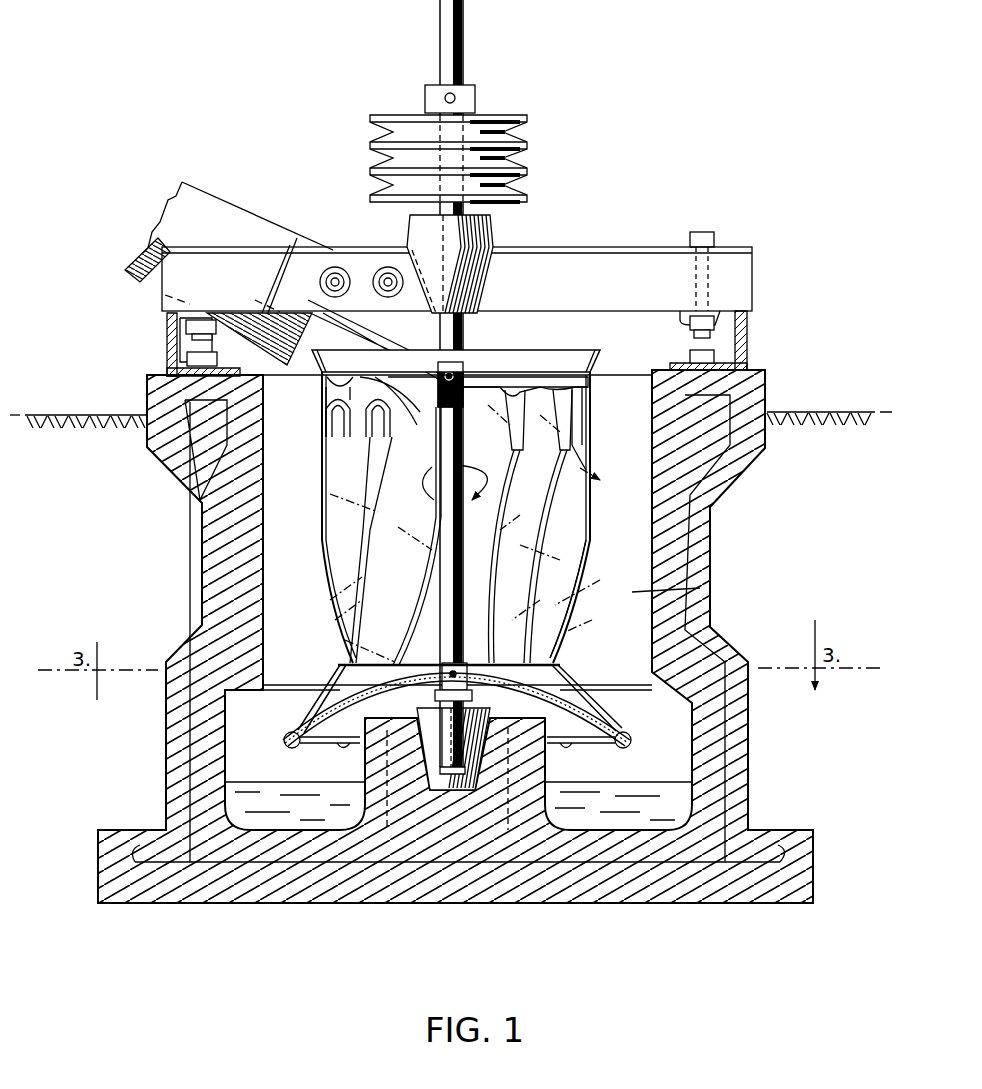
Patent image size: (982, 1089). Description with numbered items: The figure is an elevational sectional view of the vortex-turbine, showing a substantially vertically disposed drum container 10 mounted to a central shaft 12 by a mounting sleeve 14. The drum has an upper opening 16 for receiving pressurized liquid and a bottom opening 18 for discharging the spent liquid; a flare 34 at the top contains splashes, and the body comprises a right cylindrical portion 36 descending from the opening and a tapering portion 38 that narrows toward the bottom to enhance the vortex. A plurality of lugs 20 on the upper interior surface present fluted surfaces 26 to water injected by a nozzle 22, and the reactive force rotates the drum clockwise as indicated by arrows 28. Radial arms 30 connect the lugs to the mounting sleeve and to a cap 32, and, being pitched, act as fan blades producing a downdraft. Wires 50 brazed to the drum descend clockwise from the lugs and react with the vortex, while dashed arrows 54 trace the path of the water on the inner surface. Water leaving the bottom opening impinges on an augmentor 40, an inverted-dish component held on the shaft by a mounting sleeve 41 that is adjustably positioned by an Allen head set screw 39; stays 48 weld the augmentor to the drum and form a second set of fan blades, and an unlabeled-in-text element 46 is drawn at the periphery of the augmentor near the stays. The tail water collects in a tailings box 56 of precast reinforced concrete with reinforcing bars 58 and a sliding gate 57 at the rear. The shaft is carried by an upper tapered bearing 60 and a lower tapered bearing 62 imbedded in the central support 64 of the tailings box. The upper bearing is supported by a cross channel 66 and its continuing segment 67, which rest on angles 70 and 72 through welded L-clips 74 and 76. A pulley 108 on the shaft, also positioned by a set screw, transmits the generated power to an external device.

The drum container 10 is at (315, 495).
The central shaft 12 is at (445, 326).
The mounting sleeve 14 is at (504, 375).
The upper opening 16 is at (548, 357).
The bottom opening 18 is at (534, 664).
The lugs 20 is at (437, 418).
The nozzle 22 is at (348, 296).
The fluted surfaces 26 is at (380, 436).
The arrows 28 is at (428, 480).
The radial arms 30 is at (525, 375).
The cap 32 is at (437, 392).
The flare 34 is at (592, 352).
The right cylindrical portion 36 is at (588, 472).
The tapering portion 38 is at (575, 630).
The Allen head set screw 39 is at (455, 95).
The augmentor 40 is at (284, 706).
The mounting sleeve 41 is at (443, 712).
The frame feet 46 is at (313, 742).
The stays 48 is at (335, 678).
The wires 50 is at (326, 540).
The arrows 54 is at (562, 500).
The tailings box 56 is at (700, 560).
The sliding gate 57 is at (700, 588).
The reinforcing bars 58 is at (715, 480).
The tapered bearing 60 is at (490, 265).
The tapered bearing 62 is at (478, 712).
The central support 64 is at (365, 765).
The cross channel 66 is at (626, 258).
The continuing segment 67 is at (372, 250).
The angle 70 is at (166, 331).
The angle 72 is at (748, 334).
The L-clip 74 is at (188, 345).
The L-clip 76 is at (700, 337).
The pulley 108 is at (500, 118).